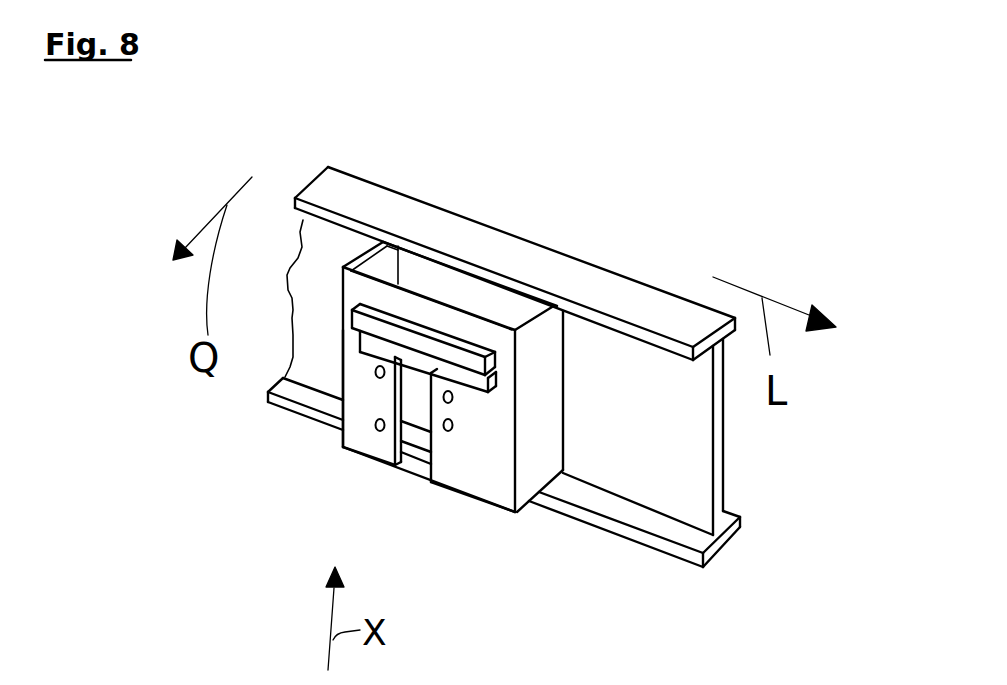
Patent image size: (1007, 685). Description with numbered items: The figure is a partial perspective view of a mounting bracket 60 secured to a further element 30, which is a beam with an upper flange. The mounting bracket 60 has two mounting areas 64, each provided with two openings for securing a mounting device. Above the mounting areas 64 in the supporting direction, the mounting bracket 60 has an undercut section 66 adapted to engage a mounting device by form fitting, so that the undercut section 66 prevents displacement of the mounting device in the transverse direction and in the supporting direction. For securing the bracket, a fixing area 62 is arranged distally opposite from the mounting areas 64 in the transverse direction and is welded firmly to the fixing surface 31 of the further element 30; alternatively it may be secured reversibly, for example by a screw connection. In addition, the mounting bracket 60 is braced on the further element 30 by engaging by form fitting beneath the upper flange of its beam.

The further element 30 is at (472, 327).
The fixing surface 31 is at (320, 282).
The mounting bracket 60 is at (381, 358).
The fixing area 62 is at (465, 287).
The mounting areas 64 is at (383, 398).
The undercut section 66 is at (417, 347).